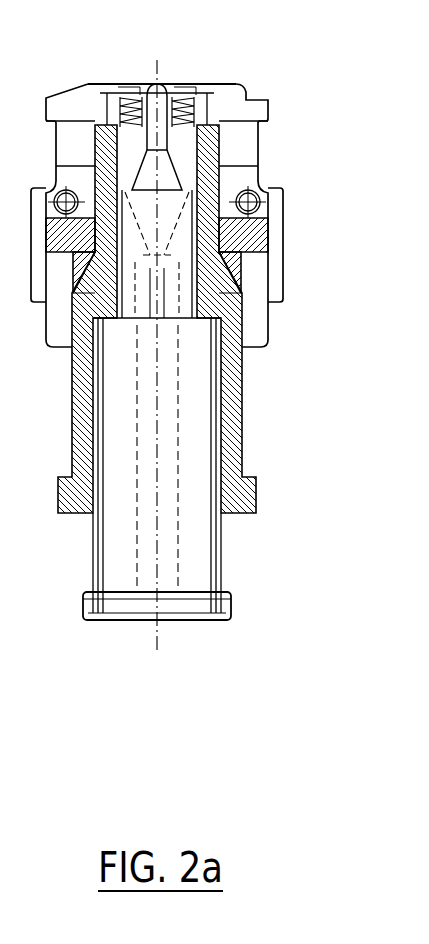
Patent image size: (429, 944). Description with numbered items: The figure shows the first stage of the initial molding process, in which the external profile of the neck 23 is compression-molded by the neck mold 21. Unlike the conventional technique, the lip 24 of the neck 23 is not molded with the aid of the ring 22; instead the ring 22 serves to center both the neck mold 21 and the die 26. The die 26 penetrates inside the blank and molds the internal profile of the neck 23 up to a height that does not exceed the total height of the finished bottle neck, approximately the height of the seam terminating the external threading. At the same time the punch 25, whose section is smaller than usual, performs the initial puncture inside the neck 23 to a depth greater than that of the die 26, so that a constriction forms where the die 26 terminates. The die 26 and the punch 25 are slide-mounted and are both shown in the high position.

The neck mold 21 is at (253, 130).
The ring 22 is at (258, 240).
The neck 23 is at (215, 83).
The lip 24 is at (225, 146).
The punch 25 is at (210, 538).
The die 26 is at (232, 410).